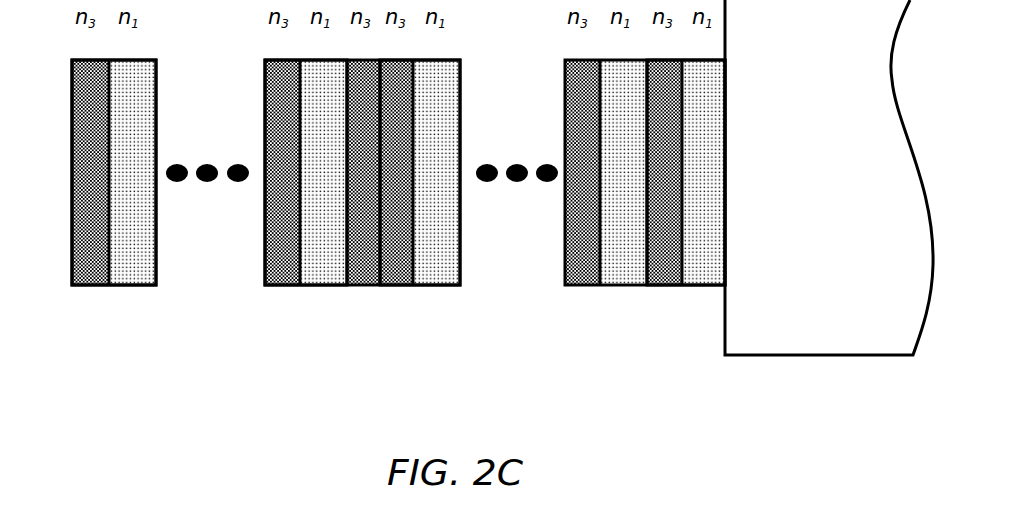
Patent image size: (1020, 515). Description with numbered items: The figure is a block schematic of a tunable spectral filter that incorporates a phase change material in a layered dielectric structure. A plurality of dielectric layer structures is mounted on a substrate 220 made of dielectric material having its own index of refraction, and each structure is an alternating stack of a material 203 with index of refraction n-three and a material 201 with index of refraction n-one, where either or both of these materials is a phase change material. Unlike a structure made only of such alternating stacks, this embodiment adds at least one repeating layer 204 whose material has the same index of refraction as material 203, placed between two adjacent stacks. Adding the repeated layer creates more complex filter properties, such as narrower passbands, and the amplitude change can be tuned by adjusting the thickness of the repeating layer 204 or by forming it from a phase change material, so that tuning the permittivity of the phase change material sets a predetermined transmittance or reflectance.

The material layer 201 is at (130, 313).
The material layer 203 is at (87, 313).
The repeating layer 204 is at (362, 290).
The substrate 220 is at (803, 370).